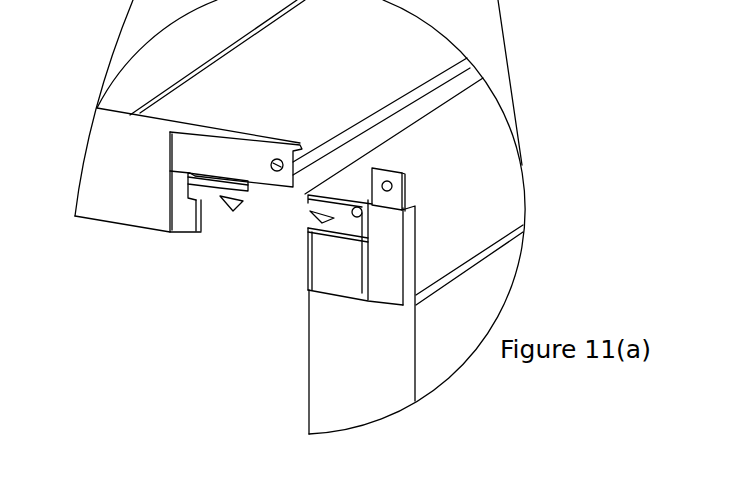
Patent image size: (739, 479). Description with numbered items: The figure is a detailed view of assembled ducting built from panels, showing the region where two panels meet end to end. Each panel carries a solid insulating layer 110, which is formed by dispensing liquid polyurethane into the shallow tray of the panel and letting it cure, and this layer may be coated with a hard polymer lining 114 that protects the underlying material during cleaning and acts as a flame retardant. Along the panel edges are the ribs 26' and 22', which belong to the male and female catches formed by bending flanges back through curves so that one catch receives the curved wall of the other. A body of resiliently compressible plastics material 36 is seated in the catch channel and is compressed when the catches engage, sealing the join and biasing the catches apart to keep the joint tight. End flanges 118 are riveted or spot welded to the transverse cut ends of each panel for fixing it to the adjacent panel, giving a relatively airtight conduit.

The end flange 118 is at (100, 200).
The rib 22' is at (218, 226).
The rib 26' is at (308, 221).
The insulating layer 110 is at (335, 264).
The hard polymer lining 114 is at (312, 250).
The body of resiliently compressible plastics material 36 is at (367, 215).